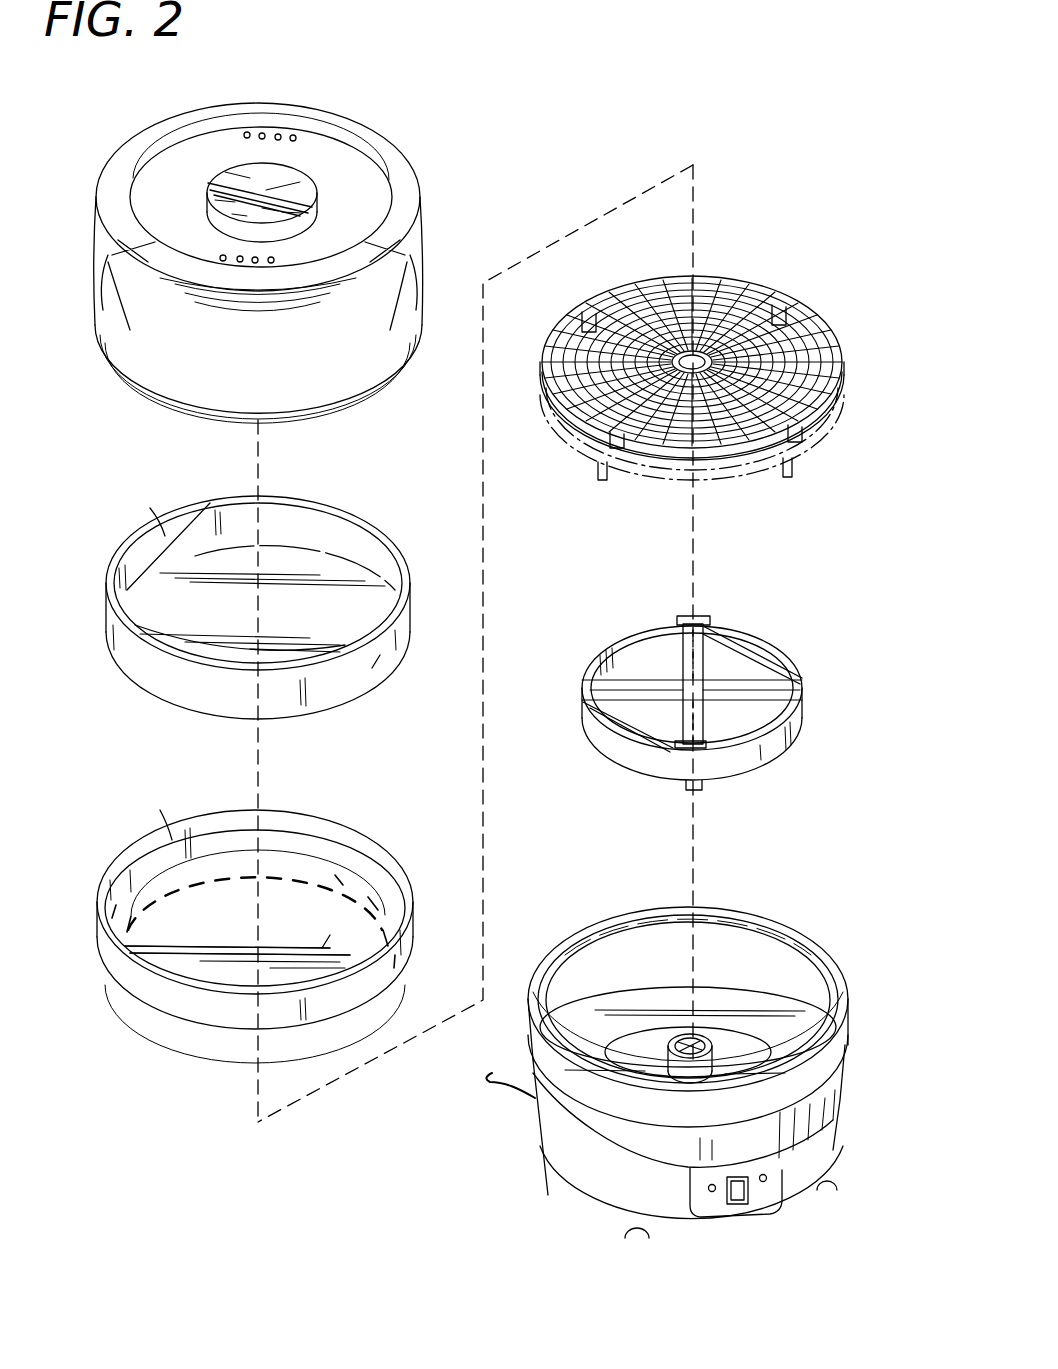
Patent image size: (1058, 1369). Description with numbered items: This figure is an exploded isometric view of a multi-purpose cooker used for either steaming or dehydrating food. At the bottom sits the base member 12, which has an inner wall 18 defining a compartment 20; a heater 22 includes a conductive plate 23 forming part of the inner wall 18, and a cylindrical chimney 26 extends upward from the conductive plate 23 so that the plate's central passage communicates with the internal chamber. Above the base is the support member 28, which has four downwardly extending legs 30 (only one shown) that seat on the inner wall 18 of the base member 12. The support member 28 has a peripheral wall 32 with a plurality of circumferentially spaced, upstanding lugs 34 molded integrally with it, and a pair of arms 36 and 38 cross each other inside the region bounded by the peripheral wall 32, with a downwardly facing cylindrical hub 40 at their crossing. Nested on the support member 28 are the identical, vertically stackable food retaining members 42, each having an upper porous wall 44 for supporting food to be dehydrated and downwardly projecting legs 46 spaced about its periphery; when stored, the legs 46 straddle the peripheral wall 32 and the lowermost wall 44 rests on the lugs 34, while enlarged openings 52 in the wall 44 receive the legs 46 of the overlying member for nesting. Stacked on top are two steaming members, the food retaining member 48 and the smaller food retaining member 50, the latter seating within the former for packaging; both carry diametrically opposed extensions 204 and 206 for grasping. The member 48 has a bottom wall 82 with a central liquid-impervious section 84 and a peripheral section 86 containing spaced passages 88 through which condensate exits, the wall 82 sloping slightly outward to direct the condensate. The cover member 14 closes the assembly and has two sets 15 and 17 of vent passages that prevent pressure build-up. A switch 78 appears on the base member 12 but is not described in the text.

The base member 12 is at (699, 1070).
The cover member 14 is at (292, 239).
The set of vent passages 15 is at (242, 118).
The set of vent passages 17 is at (283, 277).
The inner wall 18 is at (757, 1000).
The compartment 20 is at (640, 995).
The heater 22 is at (721, 1022).
The conductive plate 23 is at (760, 1050).
The cylindrical chimney 26 is at (682, 1064).
The support member 28 is at (684, 689).
The legs 30 is at (703, 790).
The peripheral wall 32 is at (805, 742).
The upstanding lugs 34 is at (705, 614).
The arm 36 is at (772, 705).
The arm 38 is at (683, 640).
The hub 40 is at (635, 720).
The food retaining members 42 is at (698, 377).
The upper porous wall 44 is at (735, 300).
The legs 46 is at (600, 465).
The food retaining member 48 is at (381, 826).
The food retaining member 50 is at (352, 486).
The enlarged openings 52 is at (590, 310).
The switch 78 is at (740, 1205).
The bottom wall 82 is at (242, 969).
The liquid-impervious section 84 is at (218, 933).
The peripheral section 86 is at (320, 862).
The passages 88 is at (345, 880).
The extension 204 is at (365, 648).
The extension 206 is at (150, 508).